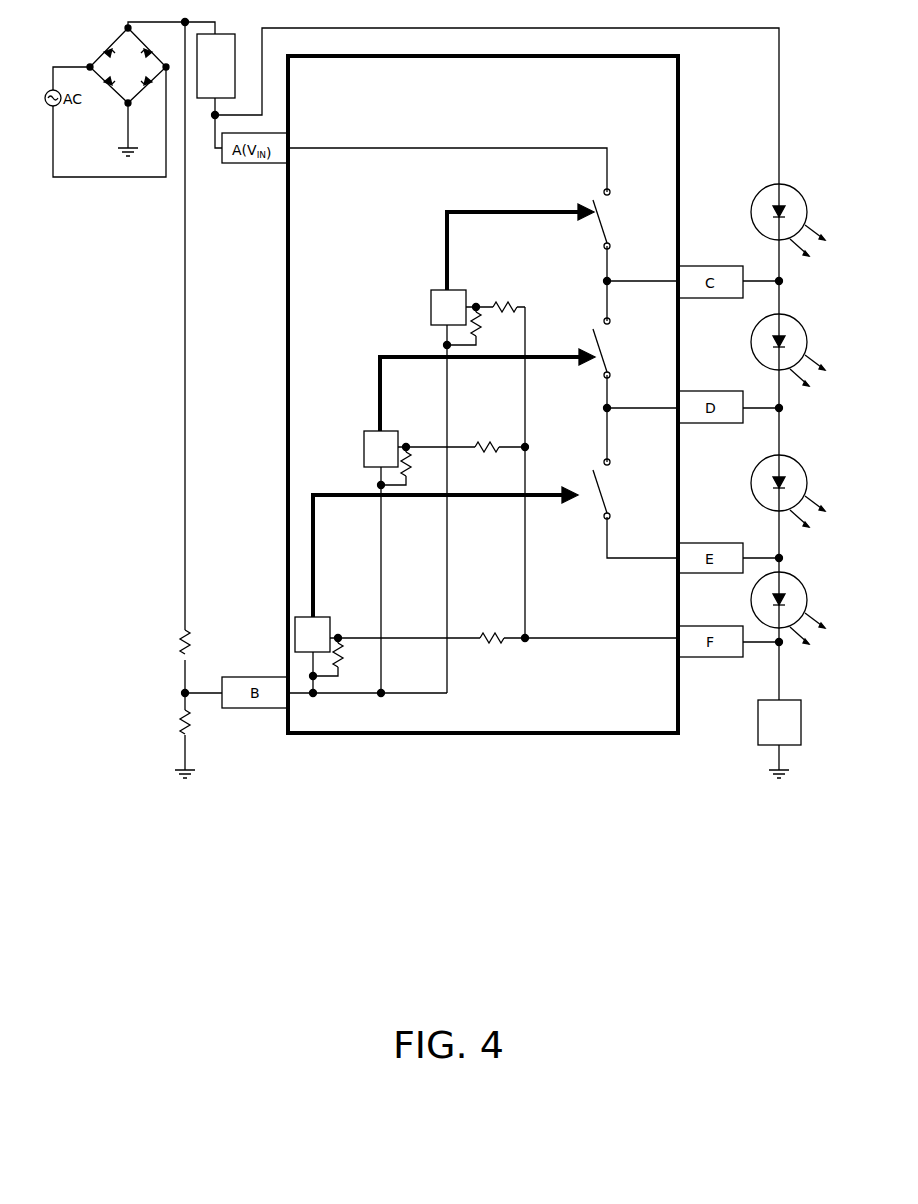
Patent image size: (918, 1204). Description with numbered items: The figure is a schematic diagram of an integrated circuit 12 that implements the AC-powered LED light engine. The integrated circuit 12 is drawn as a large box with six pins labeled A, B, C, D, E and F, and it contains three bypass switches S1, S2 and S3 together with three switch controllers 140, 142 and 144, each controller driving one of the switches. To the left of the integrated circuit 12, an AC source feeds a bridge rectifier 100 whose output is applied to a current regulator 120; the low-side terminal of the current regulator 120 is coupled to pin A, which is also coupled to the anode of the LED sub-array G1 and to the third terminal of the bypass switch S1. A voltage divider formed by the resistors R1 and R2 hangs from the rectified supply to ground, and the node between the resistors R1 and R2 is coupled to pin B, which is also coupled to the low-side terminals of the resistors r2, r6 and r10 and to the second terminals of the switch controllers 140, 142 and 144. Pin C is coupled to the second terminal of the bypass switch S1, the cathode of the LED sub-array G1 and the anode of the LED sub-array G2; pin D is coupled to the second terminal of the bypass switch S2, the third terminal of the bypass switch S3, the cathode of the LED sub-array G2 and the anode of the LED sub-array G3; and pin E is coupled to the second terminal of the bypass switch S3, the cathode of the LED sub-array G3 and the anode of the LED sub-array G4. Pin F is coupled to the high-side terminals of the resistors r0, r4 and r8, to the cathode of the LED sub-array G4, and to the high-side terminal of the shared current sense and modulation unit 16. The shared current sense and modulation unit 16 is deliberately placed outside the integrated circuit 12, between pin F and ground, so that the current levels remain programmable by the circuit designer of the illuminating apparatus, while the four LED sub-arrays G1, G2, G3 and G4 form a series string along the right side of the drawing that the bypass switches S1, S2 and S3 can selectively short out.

The integrated circuit 12 is at (678, 125).
The bridge rectifier 100 is at (128, 90).
The current regulator 120 is at (216, 66).
The switch controller 140 is at (448, 307).
The switch controller 142 is at (381, 449).
The switch controller 144 is at (312, 634).
The shared current sense and modulation unit 16 is at (779, 739).
The bypass switch S1 is at (615, 219).
The bypass switch S2 is at (615, 348).
The bypass switch S3 is at (615, 489).
The LED sub-array G1 is at (794, 220).
The LED sub-array G2 is at (794, 350).
The LED sub-array G3 is at (794, 491).
The LED sub-array G4 is at (794, 608).
The resistor R1 is at (171, 357).
The resistor R2 is at (174, 735).
The resistor r0 is at (495, 299).
The resistor r2 is at (475, 326).
The resistor r4 is at (461, 439).
The resistor r6 is at (407, 466).
The resistor r8 is at (504, 630).
The resistor r10 is at (342, 657).